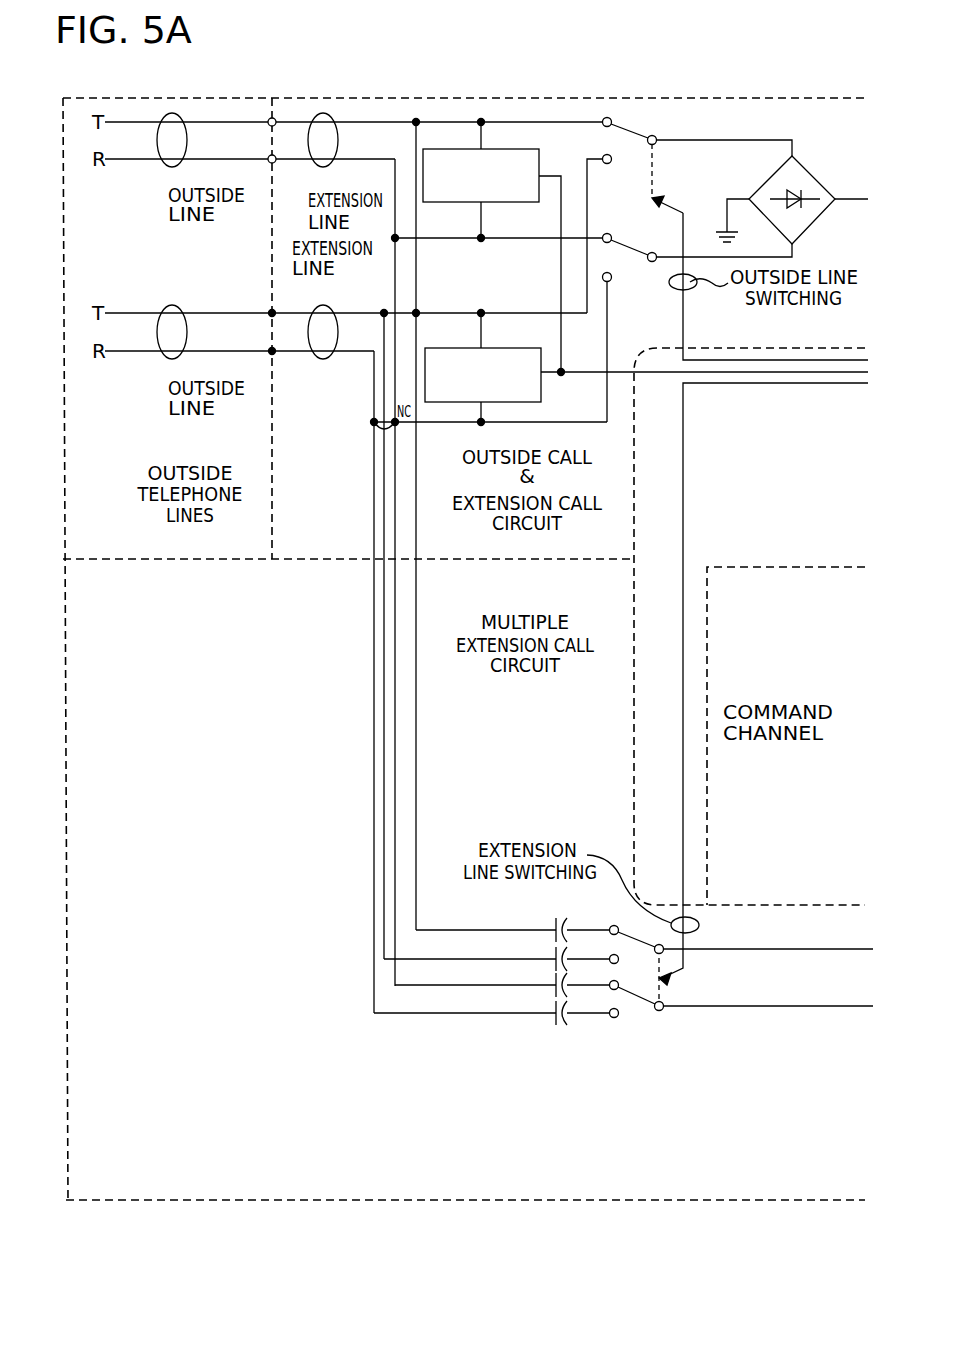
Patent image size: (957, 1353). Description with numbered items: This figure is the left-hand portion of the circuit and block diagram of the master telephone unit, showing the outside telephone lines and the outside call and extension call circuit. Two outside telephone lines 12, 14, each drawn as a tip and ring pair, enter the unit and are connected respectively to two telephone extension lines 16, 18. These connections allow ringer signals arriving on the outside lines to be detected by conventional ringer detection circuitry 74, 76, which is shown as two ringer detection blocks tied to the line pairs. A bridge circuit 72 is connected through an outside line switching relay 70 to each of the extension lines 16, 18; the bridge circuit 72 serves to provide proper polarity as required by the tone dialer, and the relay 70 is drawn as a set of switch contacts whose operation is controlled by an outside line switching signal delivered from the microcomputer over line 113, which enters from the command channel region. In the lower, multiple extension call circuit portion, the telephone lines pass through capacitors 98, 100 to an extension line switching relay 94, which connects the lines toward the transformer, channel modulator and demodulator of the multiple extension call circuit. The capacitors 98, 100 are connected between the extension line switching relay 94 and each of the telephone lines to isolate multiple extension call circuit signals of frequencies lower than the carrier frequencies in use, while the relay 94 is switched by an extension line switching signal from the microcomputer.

The outside telephone line 12 is at (168, 167).
The outside telephone line 14 is at (168, 356).
The telephone extension line 16 is at (323, 166).
The telephone extension line 18 is at (325, 305).
The outside line switching relay 70 is at (642, 270).
The bridge circuit 72 is at (797, 164).
The ringer detection circuitry 74 is at (540, 165).
The ringer detection circuitry 76 is at (541, 383).
The extension line switching relay 94 is at (720, 967).
The capacitor 98 is at (552, 1008).
The capacitor 100 is at (552, 953).
The line 113 is at (683, 317).